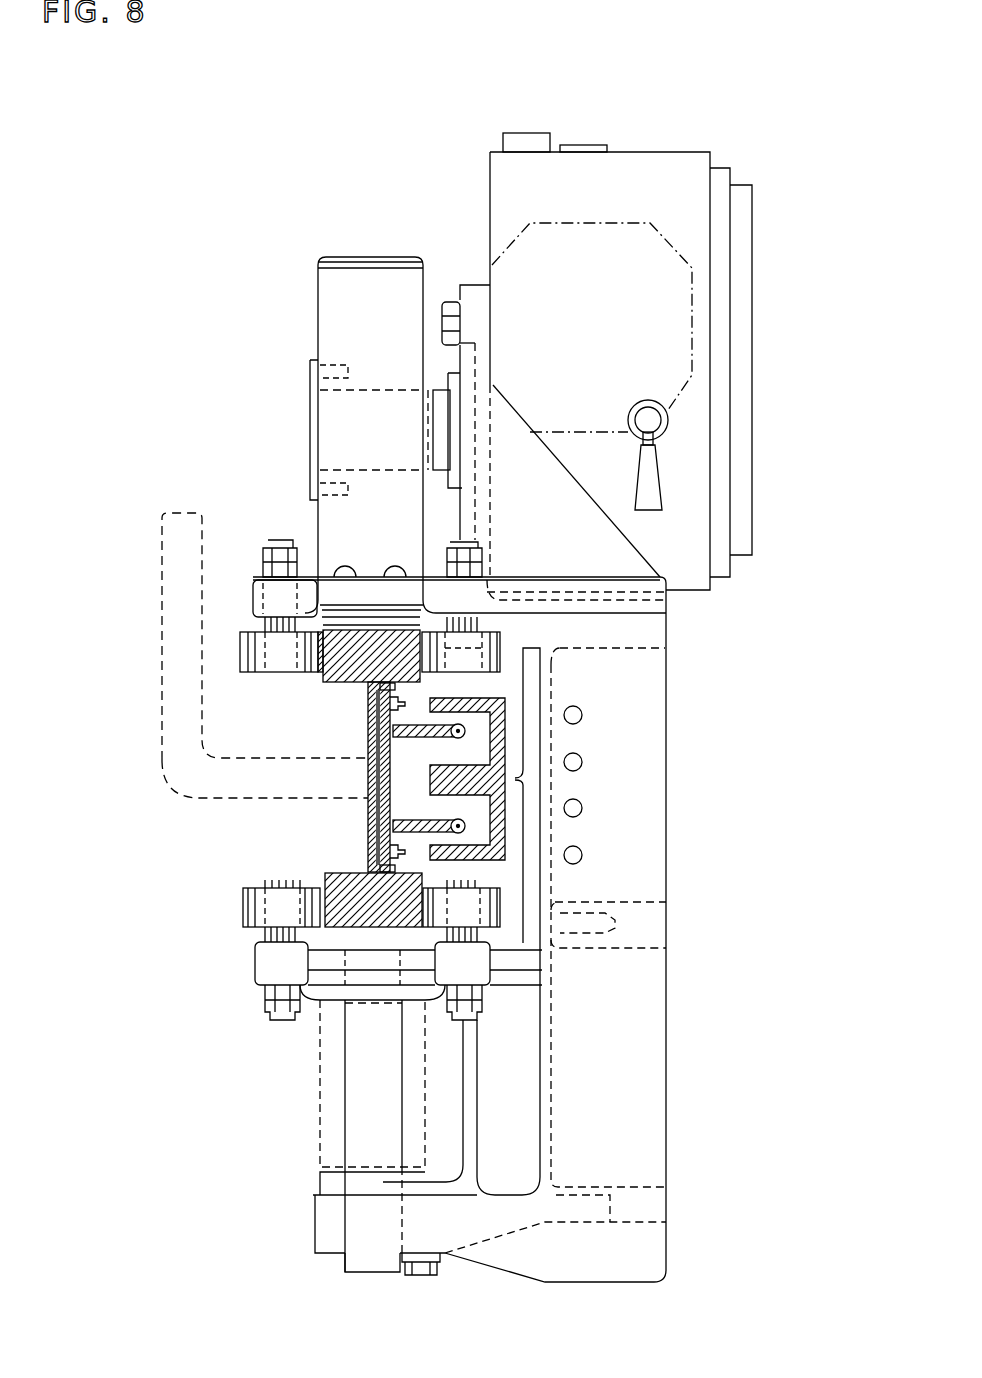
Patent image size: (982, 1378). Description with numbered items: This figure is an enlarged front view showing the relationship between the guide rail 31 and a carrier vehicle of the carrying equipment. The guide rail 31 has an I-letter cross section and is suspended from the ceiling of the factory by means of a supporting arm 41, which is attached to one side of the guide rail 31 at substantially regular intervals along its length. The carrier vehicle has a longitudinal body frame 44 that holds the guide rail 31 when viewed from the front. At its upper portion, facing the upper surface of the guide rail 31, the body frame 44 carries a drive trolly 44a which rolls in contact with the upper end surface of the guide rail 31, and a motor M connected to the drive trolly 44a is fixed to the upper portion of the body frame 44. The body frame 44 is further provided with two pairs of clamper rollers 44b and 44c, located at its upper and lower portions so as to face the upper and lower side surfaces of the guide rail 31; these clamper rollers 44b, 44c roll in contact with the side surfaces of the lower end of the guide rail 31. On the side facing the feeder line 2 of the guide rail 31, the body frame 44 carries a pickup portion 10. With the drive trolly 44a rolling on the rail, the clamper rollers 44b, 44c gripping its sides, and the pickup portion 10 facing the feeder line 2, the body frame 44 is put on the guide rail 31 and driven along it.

The motor M is at (683, 160).
The drive trolly 44a is at (363, 282).
The supporting arm 41 is at (162, 586).
The clamper rollers 44b is at (280, 665).
The guide rail 31 is at (352, 690).
The pickup portion 10 is at (505, 808).
The feeder line 2 is at (455, 737).
The clamper rollers 44c is at (277, 905).
The body frame 44 is at (668, 738).